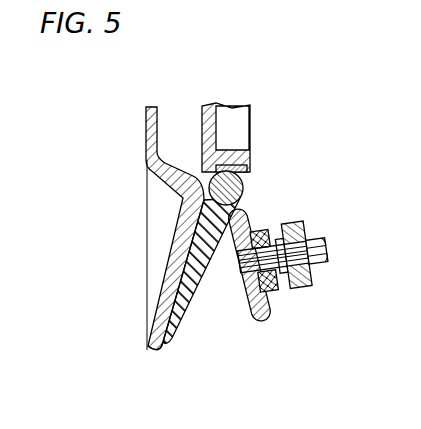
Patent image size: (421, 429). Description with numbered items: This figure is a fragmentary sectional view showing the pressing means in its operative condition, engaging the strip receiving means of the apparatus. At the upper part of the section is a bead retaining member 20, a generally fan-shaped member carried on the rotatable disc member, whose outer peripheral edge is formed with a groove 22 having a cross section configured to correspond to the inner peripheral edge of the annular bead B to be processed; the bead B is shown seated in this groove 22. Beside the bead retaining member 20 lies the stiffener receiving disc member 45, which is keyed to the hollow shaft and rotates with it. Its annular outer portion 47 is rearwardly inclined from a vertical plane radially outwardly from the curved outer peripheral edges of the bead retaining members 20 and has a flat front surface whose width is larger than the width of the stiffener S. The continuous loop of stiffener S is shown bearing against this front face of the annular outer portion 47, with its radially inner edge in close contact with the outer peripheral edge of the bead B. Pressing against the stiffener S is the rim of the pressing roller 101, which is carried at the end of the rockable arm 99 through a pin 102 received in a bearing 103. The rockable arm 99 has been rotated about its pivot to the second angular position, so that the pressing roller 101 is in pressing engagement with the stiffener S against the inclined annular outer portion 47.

The bead retaining member 20 is at (201, 118).
The stiffener receiving disc member 45 is at (141, 121).
The annular outer portion 47 is at (163, 338).
The stiffener S is at (188, 302).
The groove 22 is at (247, 176).
The annular bead B is at (242, 191).
The pressing roller 101 is at (261, 318).
The pin 102 is at (279, 246).
The rockable arm 99 is at (310, 276).
The bearing 103 is at (276, 287).